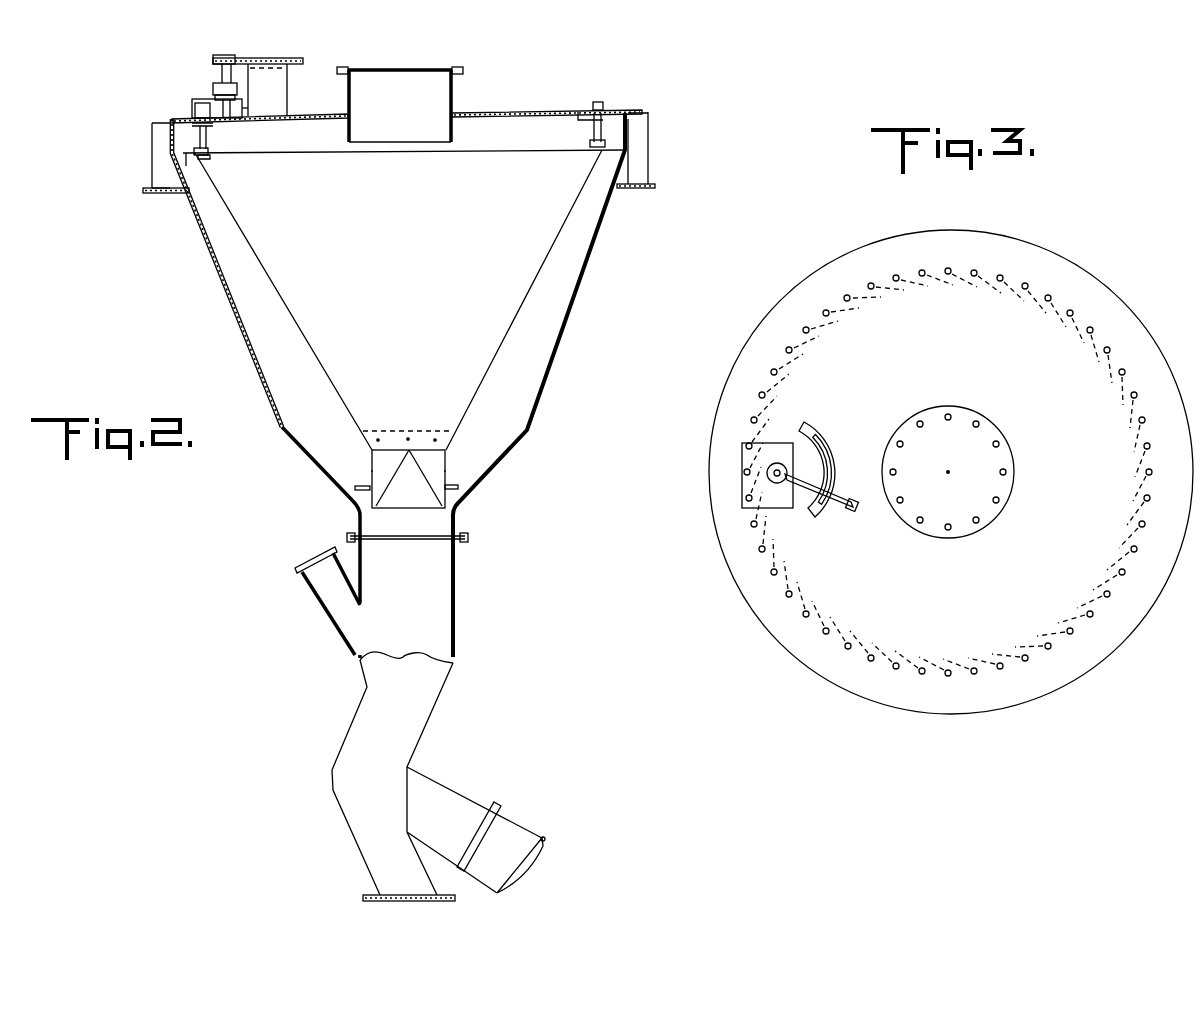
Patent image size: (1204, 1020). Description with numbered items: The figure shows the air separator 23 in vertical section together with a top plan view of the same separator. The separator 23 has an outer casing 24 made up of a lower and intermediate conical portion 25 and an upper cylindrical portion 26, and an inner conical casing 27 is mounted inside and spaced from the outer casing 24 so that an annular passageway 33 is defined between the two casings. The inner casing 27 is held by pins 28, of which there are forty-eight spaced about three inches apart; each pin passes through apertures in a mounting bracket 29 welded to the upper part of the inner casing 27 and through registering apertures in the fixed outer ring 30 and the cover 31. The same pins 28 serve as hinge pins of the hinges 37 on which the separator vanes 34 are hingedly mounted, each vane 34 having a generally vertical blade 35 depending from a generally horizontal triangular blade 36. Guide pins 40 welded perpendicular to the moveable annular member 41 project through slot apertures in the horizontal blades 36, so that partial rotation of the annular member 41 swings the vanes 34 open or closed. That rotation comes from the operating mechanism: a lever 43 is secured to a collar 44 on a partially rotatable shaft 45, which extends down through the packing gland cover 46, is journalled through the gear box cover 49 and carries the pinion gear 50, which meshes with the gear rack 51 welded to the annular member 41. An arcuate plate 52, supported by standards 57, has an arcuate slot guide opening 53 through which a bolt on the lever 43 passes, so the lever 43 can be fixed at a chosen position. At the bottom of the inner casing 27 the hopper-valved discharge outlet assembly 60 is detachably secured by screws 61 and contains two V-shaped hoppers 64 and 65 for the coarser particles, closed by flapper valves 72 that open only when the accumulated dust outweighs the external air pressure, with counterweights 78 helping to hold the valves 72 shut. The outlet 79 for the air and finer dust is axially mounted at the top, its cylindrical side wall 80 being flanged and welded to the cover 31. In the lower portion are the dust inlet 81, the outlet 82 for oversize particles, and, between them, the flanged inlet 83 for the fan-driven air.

In FIG. 2, the separator 23 is at (170, 148).
In FIG. 2, the outer casing 24 is at (217, 270).
In FIG. 2, the lower and intermediate conical portion 25 is at (233, 308).
In FIG. 2, the upper cylindrical portion 26 is at (150, 153).
In FIG. 2, the inner conical casing 27 is at (424, 287).
In FIG. 2, the pins 28 is at (601, 104).
In FIG. 3, the pins 28 is at (773, 370).
In FIG. 2, the mounting brackets 29 is at (214, 163).
In FIG. 2, the fixed outer ring 30 is at (170, 134).
In FIG. 2, the cover 31 is at (512, 111).
In FIG. 2, the annular passageway 33 is at (298, 392).
In FIG. 2, the separator vanes 34 is at (214, 134).
In FIG. 3, the separator vanes 34 is at (921, 278).
In FIG. 2, the generally vertical blade 35 is at (207, 153).
In FIG. 2, the generally horizontal triangular-shaped blade 36 is at (210, 128).
In FIG. 2, the hinges 37 is at (607, 153).
In FIG. 2, the guide pins 40 is at (580, 119).
In FIG. 2, the moveable annular member 41 is at (596, 103).
In FIG. 2, the lever 43 is at (305, 60).
In FIG. 3, the lever 43 is at (852, 512).
In FIG. 2, the collar 44 is at (216, 58).
In FIG. 3, the collar 44 is at (770, 478).
In FIG. 2, the partially rotatable shaft 45 is at (221, 71).
In FIG. 3, the partially rotatable shaft 45 is at (780, 463).
In FIG. 2, the packing gland cover 46 is at (214, 89).
In FIG. 2, the gear box cover 49 is at (196, 100).
In FIG. 3, the gear box cover 49 is at (776, 497).
In FIG. 2, the pinion gear 50 is at (249, 113).
In FIG. 2, the gear rack 51 is at (193, 105).
In FIG. 3, the arcuate-shaped plate 52 is at (810, 517).
In FIG. 3, the arcuate-shaped slot guide opening 53 is at (822, 447).
In FIG. 2, the standards 57 is at (288, 81).
In FIG. 2, the receiving hopper-valved discharge outlet assembly 60 is at (451, 454).
In FIG. 2, the screws 61 is at (410, 436).
In FIG. 2, the hopper 64 is at (375, 458).
In FIG. 2, the hopper 65 is at (447, 468).
In FIG. 2, the flapper valves 72 is at (368, 472).
In FIG. 2, the counterweights 78 is at (456, 487).
In FIG. 2, the outlet 79 is at (460, 72).
In FIG. 3, the outlet 79 is at (995, 427).
In FIG. 2, the cylindrical side wall 80 is at (454, 108).
In FIG. 2, the inlet 81 is at (322, 580).
In FIG. 2, the outlet 82 is at (395, 902).
In FIG. 2, the inlet 83 is at (441, 800).